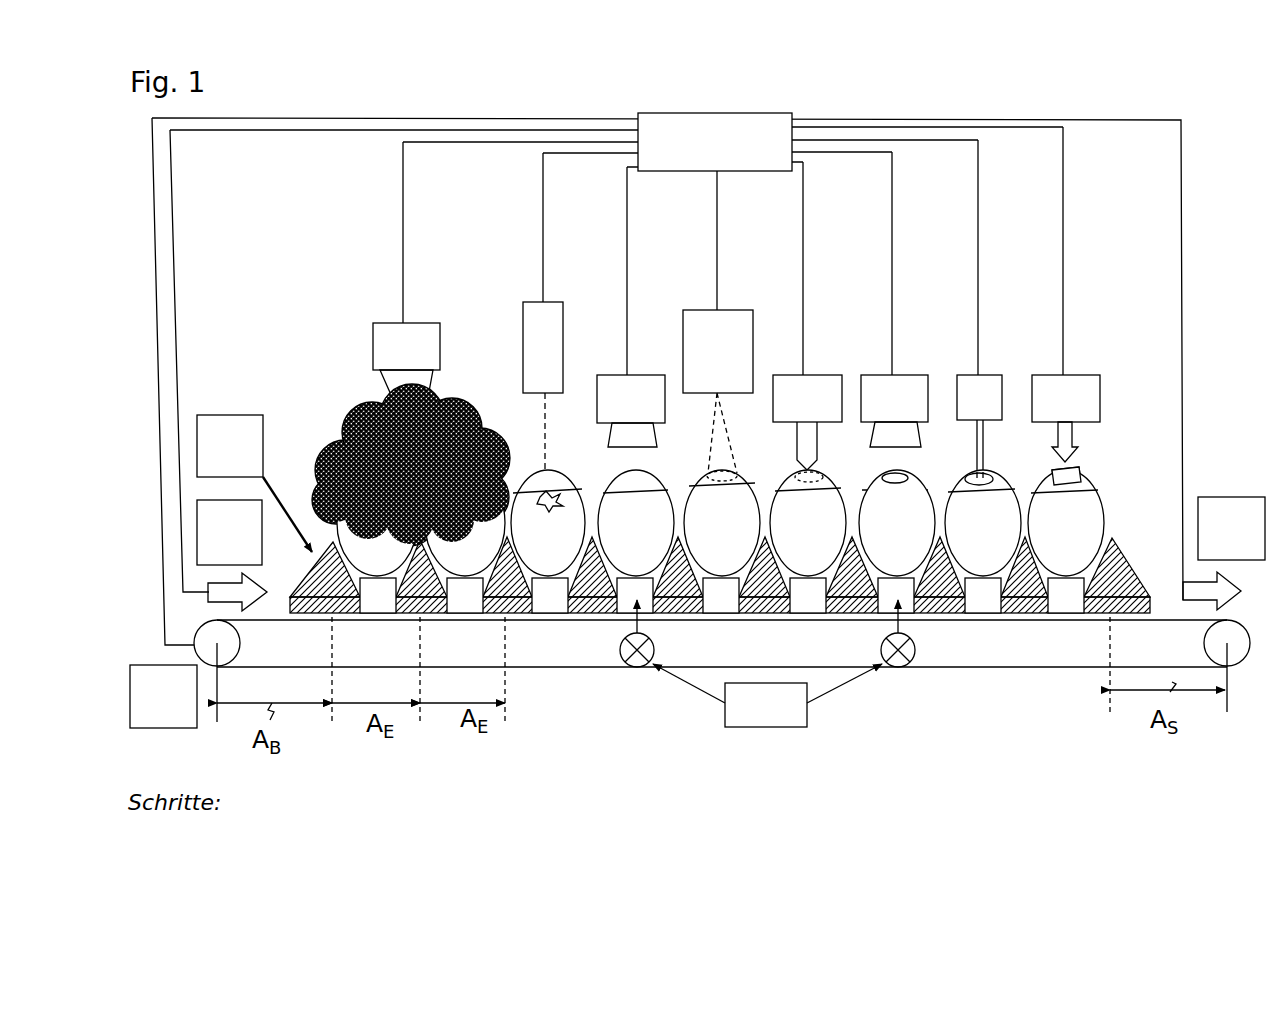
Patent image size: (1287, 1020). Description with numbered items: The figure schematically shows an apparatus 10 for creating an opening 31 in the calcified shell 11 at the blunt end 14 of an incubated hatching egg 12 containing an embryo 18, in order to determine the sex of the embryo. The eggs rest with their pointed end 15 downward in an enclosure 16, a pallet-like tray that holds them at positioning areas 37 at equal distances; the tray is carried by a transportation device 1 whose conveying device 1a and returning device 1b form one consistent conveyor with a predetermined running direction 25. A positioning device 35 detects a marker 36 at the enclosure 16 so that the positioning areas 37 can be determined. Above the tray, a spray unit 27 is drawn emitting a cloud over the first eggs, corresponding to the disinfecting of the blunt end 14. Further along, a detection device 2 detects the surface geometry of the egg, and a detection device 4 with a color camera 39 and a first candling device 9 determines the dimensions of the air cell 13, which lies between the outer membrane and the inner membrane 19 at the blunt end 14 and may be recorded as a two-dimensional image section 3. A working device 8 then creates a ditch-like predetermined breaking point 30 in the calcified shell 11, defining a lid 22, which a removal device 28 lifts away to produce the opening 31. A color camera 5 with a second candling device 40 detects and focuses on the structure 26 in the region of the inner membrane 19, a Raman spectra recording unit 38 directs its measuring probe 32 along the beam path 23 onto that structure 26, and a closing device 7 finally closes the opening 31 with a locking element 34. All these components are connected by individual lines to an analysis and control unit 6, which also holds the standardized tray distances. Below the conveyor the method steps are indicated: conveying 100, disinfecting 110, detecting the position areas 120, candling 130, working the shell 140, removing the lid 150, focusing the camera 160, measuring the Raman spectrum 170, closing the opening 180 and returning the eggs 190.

The transportation device 1 is at (312, 670).
The conveying device 1a is at (163, 696).
The returning device 1b is at (1231, 528).
The detection device 2 is at (552, 360).
The 2D image section 3 is at (638, 279).
The detection device 4 is at (639, 414).
The color camera 5 is at (902, 392).
The analysis and control unit 6 is at (724, 161).
The closing device 7 is at (1104, 398).
The working device 8 is at (726, 367).
The candling device 9 is at (672, 653).
The apparatus 10 is at (1210, 146).
The calcified shell 11 is at (584, 500).
The hatching egg 12 is at (511, 462).
The air cell 13 is at (549, 488).
The blunt end 14 is at (633, 474).
The pointed end 15 is at (466, 590).
The enclosure 16 is at (286, 590).
The embryo 18 is at (549, 508).
The inner membrane 19 is at (534, 492).
The lid 22 is at (820, 478).
The beam path 23 is at (906, 476).
The running direction 25 is at (208, 594).
The structure 26 is at (994, 482).
The spray nozzle 27 is at (431, 360).
The removal device 28 is at (807, 316).
The predetermined breaking point 30 is at (737, 475).
The opening 31 is at (901, 488).
The measuring probe 32 is at (985, 446).
The locking element 34 is at (1085, 473).
The positioning device 35 is at (221, 425).
The marker 36 is at (330, 542).
The positioning area 37 is at (378, 597).
The Raman spectra recording unit 38 is at (986, 392).
The color camera 39 is at (655, 440).
The second candling device 40 is at (861, 653).
The step 100 is at (220, 762).
The step 110 is at (423, 762).
The step 120 is at (562, 760).
The step 130 is at (643, 760).
The step 140 is at (730, 758).
The step 150 is at (813, 758).
The step 160 is at (901, 756).
The step 170 is at (987, 756).
The step 180 is at (1067, 756).
The step 190 is at (1187, 758).